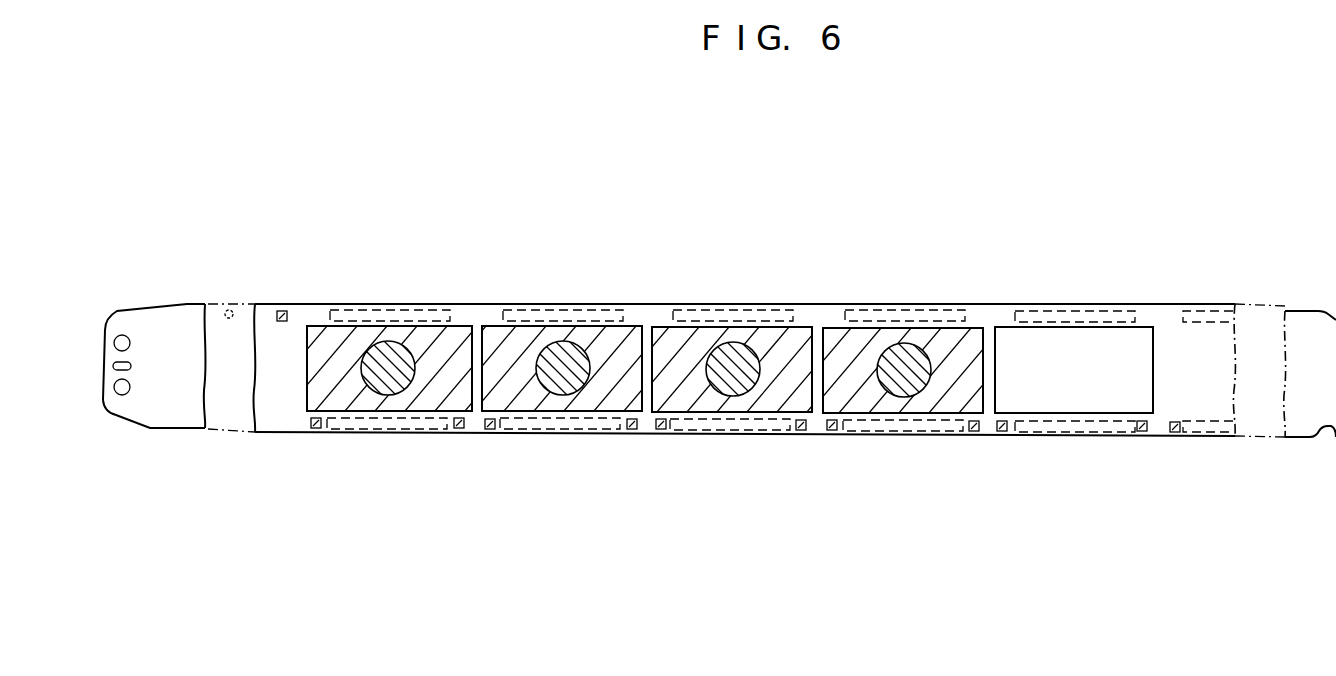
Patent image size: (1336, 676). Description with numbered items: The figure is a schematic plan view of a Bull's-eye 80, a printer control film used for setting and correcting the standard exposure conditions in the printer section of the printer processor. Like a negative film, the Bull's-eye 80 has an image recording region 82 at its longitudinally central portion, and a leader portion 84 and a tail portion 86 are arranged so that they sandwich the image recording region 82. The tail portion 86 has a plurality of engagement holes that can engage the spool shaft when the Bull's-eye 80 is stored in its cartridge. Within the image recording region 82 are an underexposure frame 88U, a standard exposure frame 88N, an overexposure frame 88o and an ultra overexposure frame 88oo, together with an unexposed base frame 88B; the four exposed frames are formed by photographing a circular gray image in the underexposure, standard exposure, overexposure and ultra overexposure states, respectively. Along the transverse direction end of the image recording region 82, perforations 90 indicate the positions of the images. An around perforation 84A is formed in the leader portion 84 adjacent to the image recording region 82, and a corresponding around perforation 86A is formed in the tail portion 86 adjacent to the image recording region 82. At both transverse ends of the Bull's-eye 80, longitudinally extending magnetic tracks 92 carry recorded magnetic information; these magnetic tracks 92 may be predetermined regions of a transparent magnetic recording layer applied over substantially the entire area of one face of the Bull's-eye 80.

The Bull's-eye 80 is at (816, 231).
The image recording region 82 is at (1140, 536).
The leader portion 84 is at (1335, 547).
The around perforation 84A is at (1175, 432).
The tail portion 86 is at (285, 527).
The around perforation 86A is at (283, 310).
The ultra overexposure frame 88oo is at (351, 398).
The overexposure frame 88o is at (534, 400).
The standard exposure frame 88N is at (697, 400).
The underexposure frame 88U is at (877, 400).
The unexposed base frame 88B is at (1036, 400).
The perforations 90 is at (462, 429).
The magnetic tracks 92 is at (418, 463).